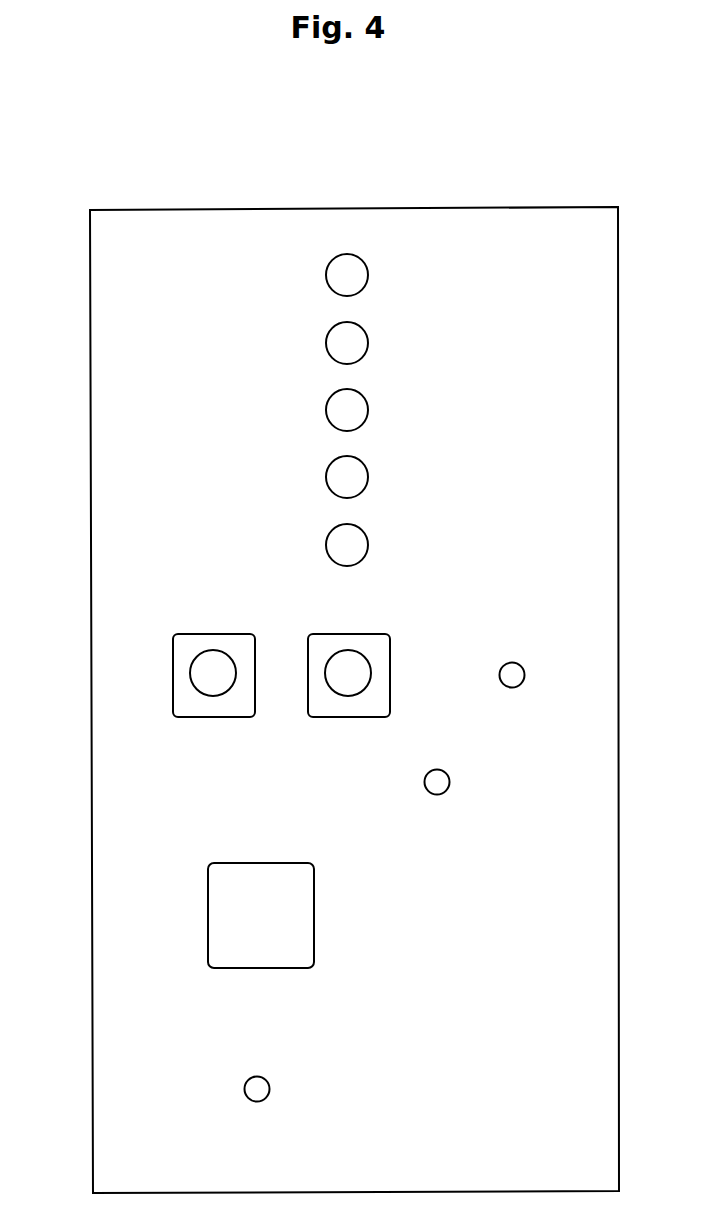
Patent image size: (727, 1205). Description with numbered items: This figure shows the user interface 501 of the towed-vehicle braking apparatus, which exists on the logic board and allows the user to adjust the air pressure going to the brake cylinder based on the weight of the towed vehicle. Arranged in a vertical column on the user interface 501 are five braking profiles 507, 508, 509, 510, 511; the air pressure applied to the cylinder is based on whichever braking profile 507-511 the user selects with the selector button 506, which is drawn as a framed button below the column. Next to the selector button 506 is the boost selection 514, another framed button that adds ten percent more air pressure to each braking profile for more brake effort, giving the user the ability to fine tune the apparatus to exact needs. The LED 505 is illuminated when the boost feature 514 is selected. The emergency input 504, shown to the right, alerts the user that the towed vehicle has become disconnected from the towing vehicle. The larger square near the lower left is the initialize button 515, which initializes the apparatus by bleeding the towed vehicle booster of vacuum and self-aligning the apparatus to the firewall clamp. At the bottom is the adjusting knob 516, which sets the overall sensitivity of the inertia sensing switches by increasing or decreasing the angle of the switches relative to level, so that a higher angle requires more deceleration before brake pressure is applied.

The user interface 501 is at (127, 248).
The emergency input 504 is at (526, 675).
The LED 505 is at (451, 782).
The selector button 506 is at (213, 700).
The braking profile 507 is at (370, 275).
The braking profile 508 is at (370, 343).
The braking profile 509 is at (370, 410).
The braking profile 510 is at (370, 477).
The braking profile 511 is at (370, 545).
The boost selection 514 is at (348, 700).
The initialize button 515 is at (208, 913).
The adjusting knob 516 is at (243, 1089).